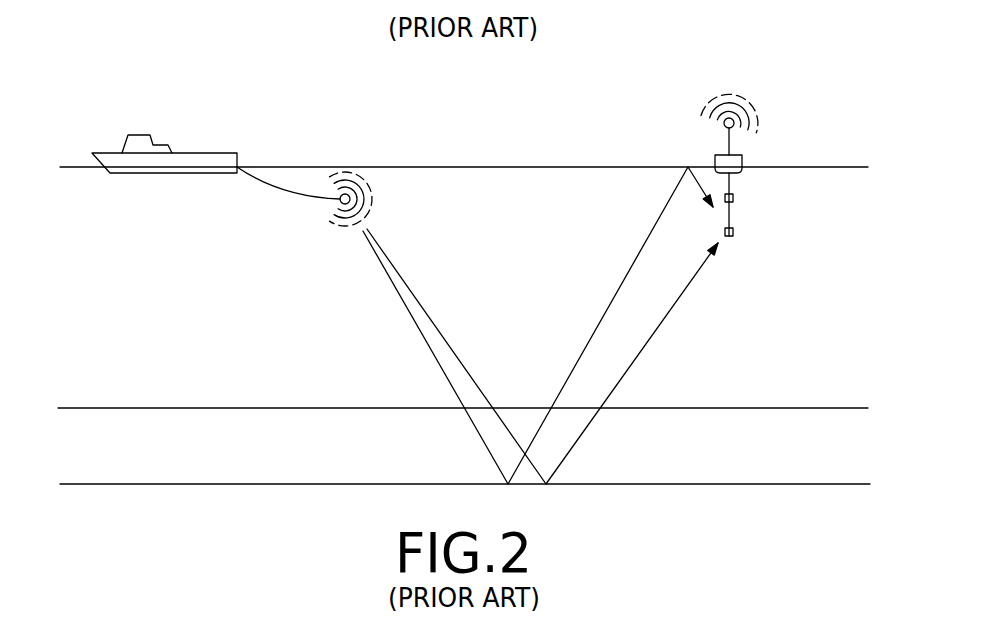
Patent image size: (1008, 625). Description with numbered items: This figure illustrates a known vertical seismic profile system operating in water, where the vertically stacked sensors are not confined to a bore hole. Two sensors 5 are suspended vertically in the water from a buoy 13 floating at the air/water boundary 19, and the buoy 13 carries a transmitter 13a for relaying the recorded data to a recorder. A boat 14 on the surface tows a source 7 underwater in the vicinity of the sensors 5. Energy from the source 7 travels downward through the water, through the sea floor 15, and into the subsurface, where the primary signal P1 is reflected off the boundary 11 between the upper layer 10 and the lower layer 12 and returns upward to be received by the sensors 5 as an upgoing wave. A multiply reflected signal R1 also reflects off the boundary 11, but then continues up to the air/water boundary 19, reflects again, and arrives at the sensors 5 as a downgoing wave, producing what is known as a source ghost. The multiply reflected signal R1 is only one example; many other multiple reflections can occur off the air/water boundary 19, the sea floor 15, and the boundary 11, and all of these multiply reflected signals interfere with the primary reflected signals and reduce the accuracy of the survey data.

The sensors 5 is at (735, 197).
The source 7 is at (341, 203).
The layer 10 is at (867, 455).
The boundary 11 is at (278, 485).
The layer 12 is at (867, 545).
The buoy 13 is at (715, 160).
The transmitter 13a is at (727, 138).
The boat 14 is at (137, 142).
The sea floor 15 is at (282, 407).
The air/water boundary 19 is at (808, 166).
The multiply reflected signal R1 is at (699, 187).
The primary signal P1 is at (671, 309).